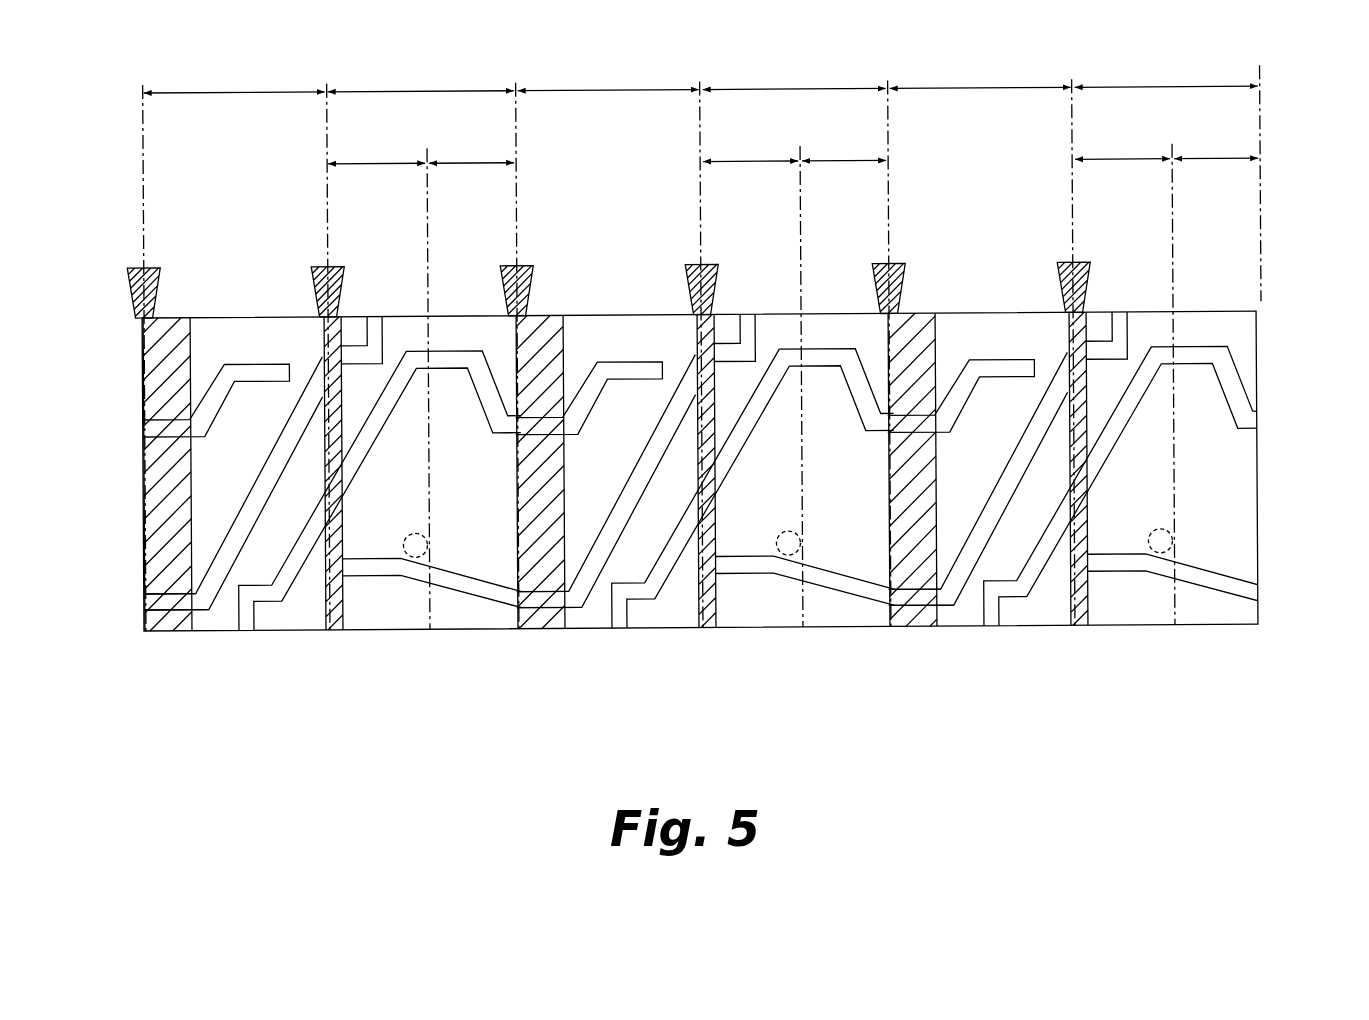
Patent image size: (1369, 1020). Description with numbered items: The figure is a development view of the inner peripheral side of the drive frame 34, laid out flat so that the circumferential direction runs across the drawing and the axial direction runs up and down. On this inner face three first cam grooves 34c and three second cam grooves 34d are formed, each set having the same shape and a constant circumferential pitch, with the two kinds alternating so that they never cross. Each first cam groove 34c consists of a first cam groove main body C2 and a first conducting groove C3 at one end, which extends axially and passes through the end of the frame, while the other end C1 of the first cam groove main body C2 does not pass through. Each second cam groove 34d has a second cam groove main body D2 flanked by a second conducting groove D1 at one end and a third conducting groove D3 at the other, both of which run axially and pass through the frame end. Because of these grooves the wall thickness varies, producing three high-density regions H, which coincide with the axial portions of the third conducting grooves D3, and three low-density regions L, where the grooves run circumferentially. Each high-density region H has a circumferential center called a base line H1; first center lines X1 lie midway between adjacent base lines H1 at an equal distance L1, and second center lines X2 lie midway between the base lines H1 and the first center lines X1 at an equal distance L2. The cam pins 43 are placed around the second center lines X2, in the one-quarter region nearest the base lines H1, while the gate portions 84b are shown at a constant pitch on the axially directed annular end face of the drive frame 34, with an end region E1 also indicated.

The drive frame 34 is at (1272, 312).
The first cam grooves 34c is at (612, 532).
The second cam grooves 34d is at (710, 618).
The cam pins 43 is at (804, 636).
The gate portions 84b is at (584, 248).
The first center lines X1 is at (703, 337).
The base lines H1 is at (701, 337).
The second center lines X2 is at (798, 365).
The distance between base lines and first center lines L1 is at (701, 78).
The distance between base lines and second center lines L2 is at (793, 146).
The low-density regions L is at (540, 541).
The high-density regions H is at (728, 553).
The other end of first cam groove main body C1 is at (603, 308).
The first cam groove main body C2 is at (752, 515).
The first conducting groove C3 is at (612, 656).
The second conducting groove D1 is at (735, 292).
The second cam groove main body D2 is at (605, 528).
The third conducting groove D3 is at (704, 660).
The end region E1 is at (637, 293).